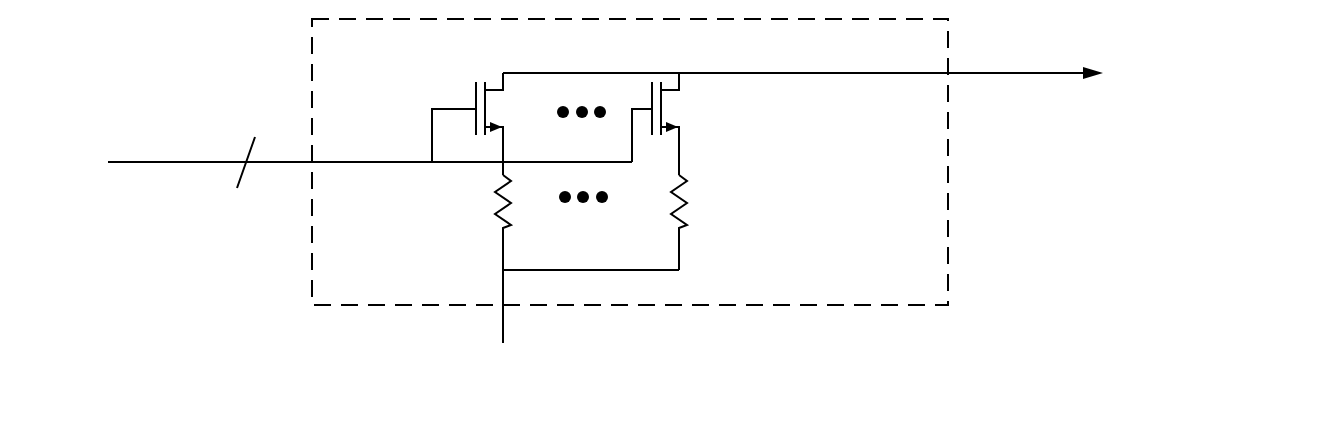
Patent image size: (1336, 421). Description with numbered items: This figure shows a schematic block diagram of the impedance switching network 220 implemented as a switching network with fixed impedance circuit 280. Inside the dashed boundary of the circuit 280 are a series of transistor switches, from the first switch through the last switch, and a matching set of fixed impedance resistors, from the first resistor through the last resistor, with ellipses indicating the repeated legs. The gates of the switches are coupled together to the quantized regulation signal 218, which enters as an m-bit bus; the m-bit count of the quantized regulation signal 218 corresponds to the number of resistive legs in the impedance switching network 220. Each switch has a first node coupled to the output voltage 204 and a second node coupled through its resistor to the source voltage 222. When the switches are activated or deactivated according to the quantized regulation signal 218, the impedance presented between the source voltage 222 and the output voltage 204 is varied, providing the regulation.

The impedance switching network 220 is at (1223, 162).
The switching network with fixed impedance circuit 280 is at (630, 162).
The quantized regulation signal 218 is at (370, 132).
The output voltage 204 is at (803, 45).
The source voltage 222 is at (502, 334).